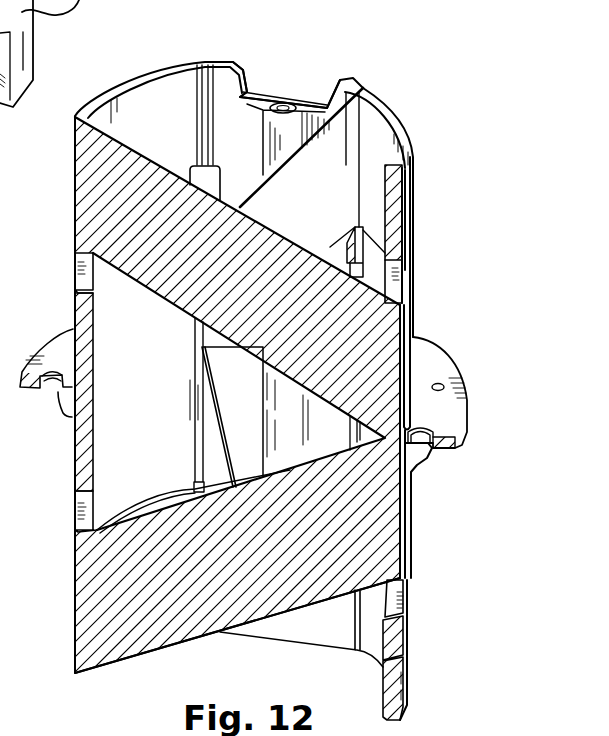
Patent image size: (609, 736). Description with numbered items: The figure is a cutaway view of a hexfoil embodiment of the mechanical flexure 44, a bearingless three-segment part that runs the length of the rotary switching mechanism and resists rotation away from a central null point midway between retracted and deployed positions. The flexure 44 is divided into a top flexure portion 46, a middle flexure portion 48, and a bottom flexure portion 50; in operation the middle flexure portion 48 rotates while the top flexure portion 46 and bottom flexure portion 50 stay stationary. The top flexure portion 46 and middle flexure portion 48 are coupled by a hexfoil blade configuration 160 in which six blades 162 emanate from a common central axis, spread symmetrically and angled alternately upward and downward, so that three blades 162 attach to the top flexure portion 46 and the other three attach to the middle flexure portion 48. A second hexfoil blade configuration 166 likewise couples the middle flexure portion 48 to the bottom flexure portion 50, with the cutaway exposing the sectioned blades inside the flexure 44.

The mechanical flexure 44 is at (458, 84).
The top flexure portion 46 is at (403, 228).
The middle flexure portion 48 is at (476, 456).
The bottom flexure portion 50 is at (406, 635).
The hexfoil blade configuration 160 is at (301, 57).
The blades 162 is at (132, 218).
The second hexfoil blade configuration 166 is at (157, 692).